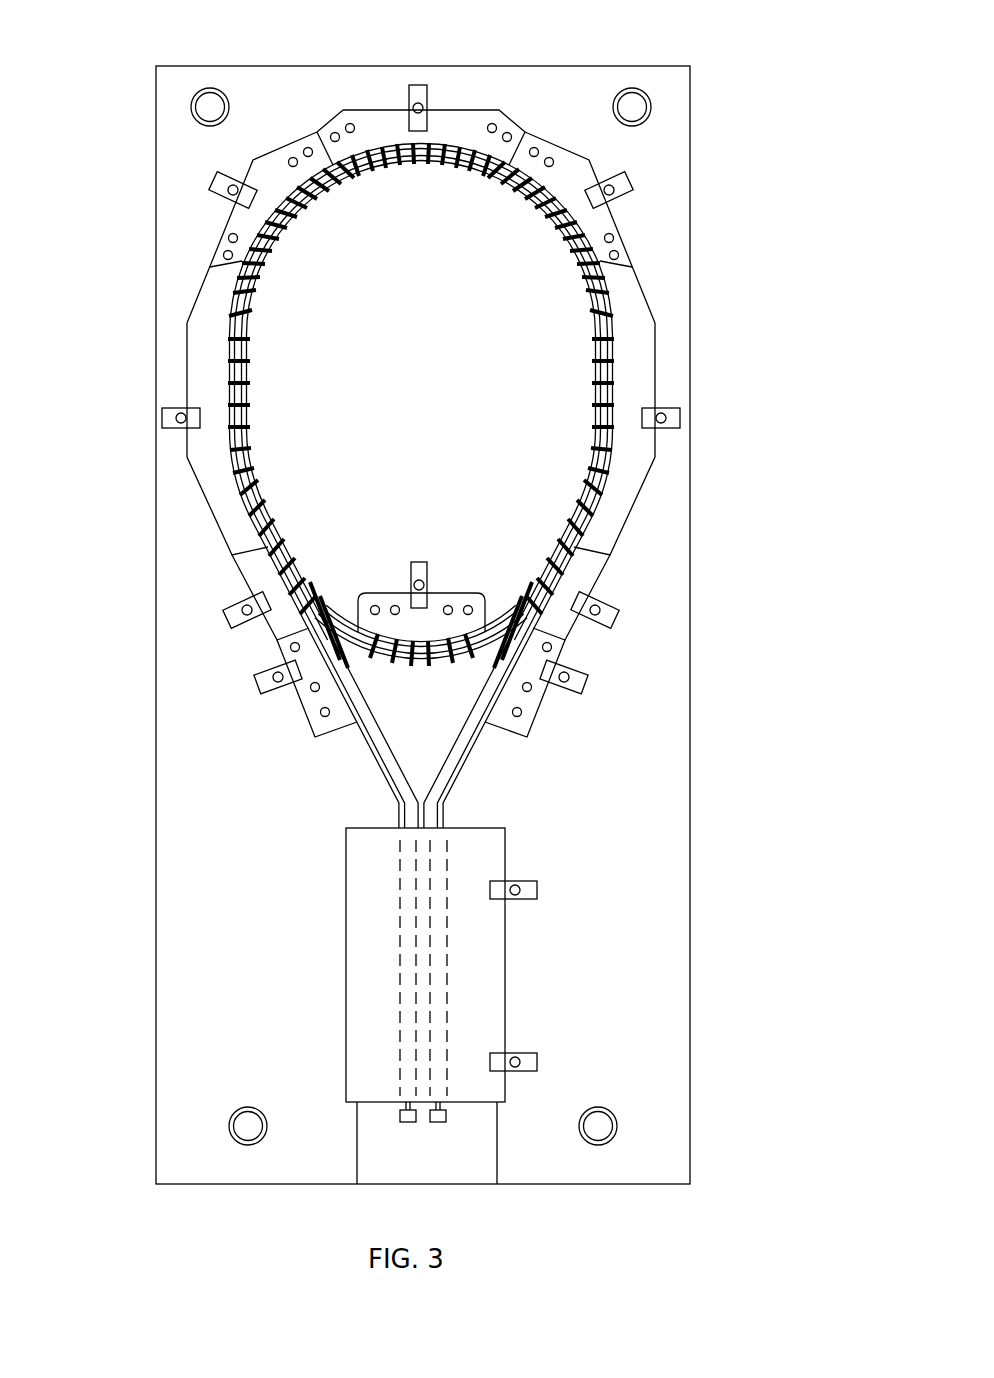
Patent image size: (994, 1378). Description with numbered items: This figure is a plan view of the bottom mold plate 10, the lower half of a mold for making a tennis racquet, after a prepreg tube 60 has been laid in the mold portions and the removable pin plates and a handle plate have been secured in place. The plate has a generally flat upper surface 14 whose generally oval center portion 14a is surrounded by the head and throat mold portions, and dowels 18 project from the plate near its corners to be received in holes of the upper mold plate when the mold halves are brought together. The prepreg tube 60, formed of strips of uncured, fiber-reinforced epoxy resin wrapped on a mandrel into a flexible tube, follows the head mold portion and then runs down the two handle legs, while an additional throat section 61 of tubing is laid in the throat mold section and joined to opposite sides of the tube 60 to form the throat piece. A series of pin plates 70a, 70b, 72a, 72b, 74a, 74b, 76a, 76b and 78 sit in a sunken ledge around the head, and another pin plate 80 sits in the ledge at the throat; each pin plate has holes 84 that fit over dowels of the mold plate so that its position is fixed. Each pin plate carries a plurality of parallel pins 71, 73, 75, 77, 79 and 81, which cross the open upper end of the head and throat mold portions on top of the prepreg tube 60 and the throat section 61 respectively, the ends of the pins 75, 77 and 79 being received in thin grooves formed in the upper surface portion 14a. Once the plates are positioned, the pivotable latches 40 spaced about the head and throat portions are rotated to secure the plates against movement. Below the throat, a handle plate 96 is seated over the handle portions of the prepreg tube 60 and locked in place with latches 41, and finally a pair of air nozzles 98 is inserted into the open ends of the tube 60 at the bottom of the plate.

The mold plate 10 is at (692, 888).
The upper surface 14 is at (485, 997).
The oval portion 14a is at (436, 373).
The dowels 18 is at (191, 106).
The latches 40 is at (418, 85).
The latches 41 is at (530, 880).
The prepreg tube 60 is at (387, 766).
The throat section 61 is at (428, 664).
The pin plate 70a is at (289, 706).
The pin plate 70b is at (540, 714).
The pins 71 is at (338, 594).
The pin plate 72a is at (257, 626).
The pin plate 72b is at (610, 553).
The pins 73 is at (290, 537).
The pin plate 74a is at (185, 346).
The pin plate 74b is at (658, 330).
The pins 75 is at (263, 450).
The pin plate 76a is at (205, 227).
The pin plate 76b is at (633, 230).
The pins 77 is at (283, 235).
The pin plate 78 is at (363, 110).
The pins 79 is at (405, 167).
The pin plate 80 is at (368, 593).
The pins 81 is at (398, 664).
The holes 84 is at (227, 238).
The handle plate 96 is at (494, 962).
The air nozzles 98 is at (408, 1124).